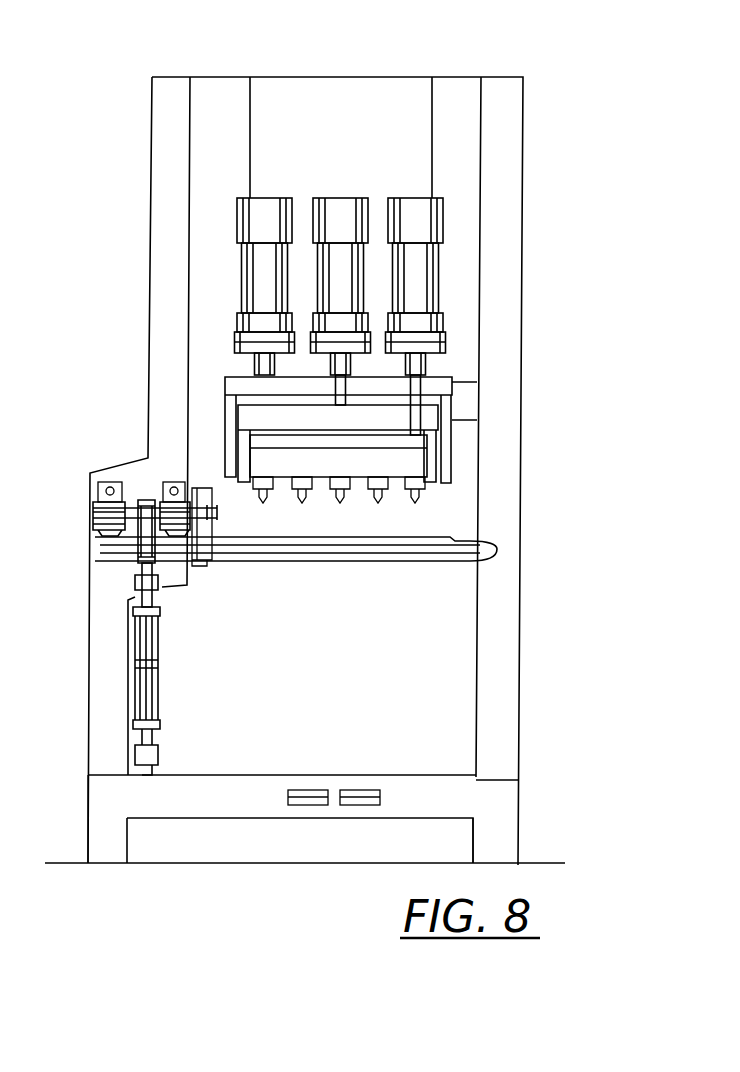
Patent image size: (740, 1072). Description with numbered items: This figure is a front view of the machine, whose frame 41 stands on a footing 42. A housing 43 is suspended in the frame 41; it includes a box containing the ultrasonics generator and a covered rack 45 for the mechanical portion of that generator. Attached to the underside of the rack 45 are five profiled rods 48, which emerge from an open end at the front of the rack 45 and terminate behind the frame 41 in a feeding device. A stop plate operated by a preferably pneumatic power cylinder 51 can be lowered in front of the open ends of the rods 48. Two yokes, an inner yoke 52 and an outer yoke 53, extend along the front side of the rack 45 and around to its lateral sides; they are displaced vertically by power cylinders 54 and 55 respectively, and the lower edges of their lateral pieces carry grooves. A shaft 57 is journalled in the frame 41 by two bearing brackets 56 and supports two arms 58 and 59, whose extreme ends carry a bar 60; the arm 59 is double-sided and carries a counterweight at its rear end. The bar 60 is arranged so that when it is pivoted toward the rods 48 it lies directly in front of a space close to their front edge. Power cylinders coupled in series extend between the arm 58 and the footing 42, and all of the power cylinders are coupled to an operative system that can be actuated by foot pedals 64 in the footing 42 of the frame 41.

The frame 41 is at (509, 68).
The footing 42 is at (488, 804).
The housing 43 is at (460, 68).
The covered rack 45 is at (250, 125).
The profiled rods 48 is at (420, 497).
The power cylinder 51 is at (415, 218).
The inner yoke 52 is at (428, 418).
The outer yoke 53 is at (440, 390).
The power cylinder 54 is at (340, 215).
The power cylinder 55 is at (265, 218).
The mounting lugs 56 is at (174, 482).
The shaft 57 is at (93, 508).
The arm 58 is at (137, 537).
The arm 59 is at (138, 572).
The bar 60 is at (415, 548).
The foot pedals 64 is at (309, 805).